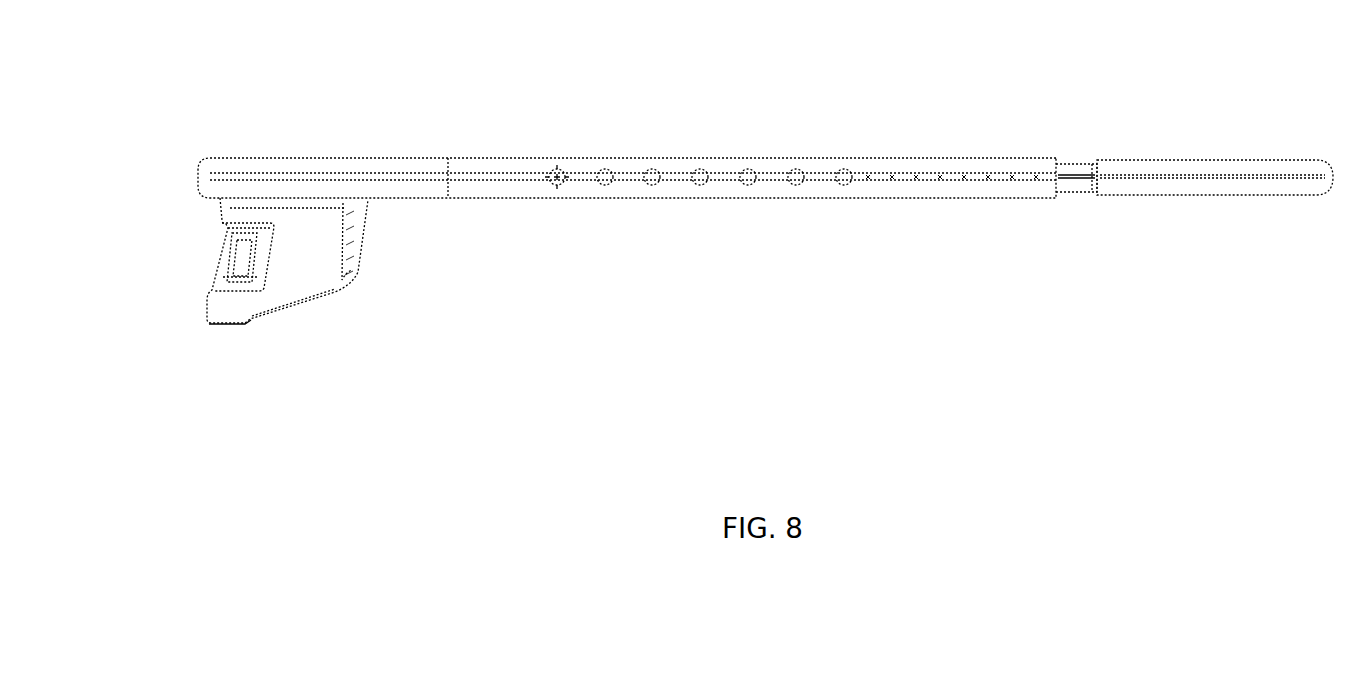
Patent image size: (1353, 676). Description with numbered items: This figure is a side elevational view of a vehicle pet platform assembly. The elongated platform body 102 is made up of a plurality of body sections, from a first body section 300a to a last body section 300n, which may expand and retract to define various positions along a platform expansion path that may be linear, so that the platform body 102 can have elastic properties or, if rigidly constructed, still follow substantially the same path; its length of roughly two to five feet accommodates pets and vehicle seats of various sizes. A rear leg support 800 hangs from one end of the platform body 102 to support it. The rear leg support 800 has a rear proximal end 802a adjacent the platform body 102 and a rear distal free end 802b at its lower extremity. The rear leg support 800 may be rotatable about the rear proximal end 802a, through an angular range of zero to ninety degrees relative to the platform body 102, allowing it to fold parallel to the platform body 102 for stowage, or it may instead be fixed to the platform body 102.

The platform body 102 is at (458, 163).
The body section 300a is at (527, 165).
The body section 300n is at (1120, 166).
The rear leg support 800 is at (188, 238).
The rear proximal end 802a is at (217, 208).
The rear distal free end 802b is at (202, 322).